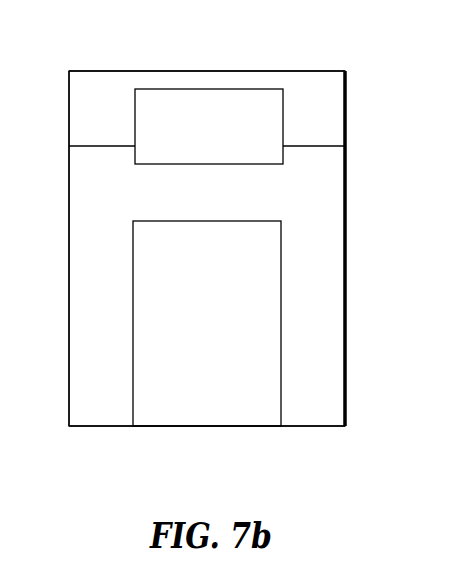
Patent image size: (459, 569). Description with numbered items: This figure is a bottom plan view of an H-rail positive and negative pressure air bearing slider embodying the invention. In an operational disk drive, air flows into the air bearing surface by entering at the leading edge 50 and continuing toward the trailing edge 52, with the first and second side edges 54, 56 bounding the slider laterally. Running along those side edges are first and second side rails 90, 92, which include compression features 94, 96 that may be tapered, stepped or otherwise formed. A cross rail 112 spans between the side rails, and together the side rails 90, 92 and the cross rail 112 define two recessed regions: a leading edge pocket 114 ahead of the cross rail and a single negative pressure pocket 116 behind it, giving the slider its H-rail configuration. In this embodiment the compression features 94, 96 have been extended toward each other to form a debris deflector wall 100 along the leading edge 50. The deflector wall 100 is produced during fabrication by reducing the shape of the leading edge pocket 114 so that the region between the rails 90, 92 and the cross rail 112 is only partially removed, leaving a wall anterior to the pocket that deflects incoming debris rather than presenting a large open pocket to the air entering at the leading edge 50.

The leading edge 50 is at (317, 71).
The trailing edge 52 is at (260, 428).
The first side edge 54 is at (68, 335).
The second side edge 56 is at (345, 336).
The first side rail 90 is at (77, 230).
The second side rail 92 is at (338, 243).
The compression feature 94 is at (77, 115).
The compression feature 96 is at (337, 124).
The debris deflector wall 100 is at (182, 75).
The cross rail 112 is at (191, 205).
The leading edge pocket 114 is at (192, 142).
The negative pressure pocket 116 is at (191, 308).